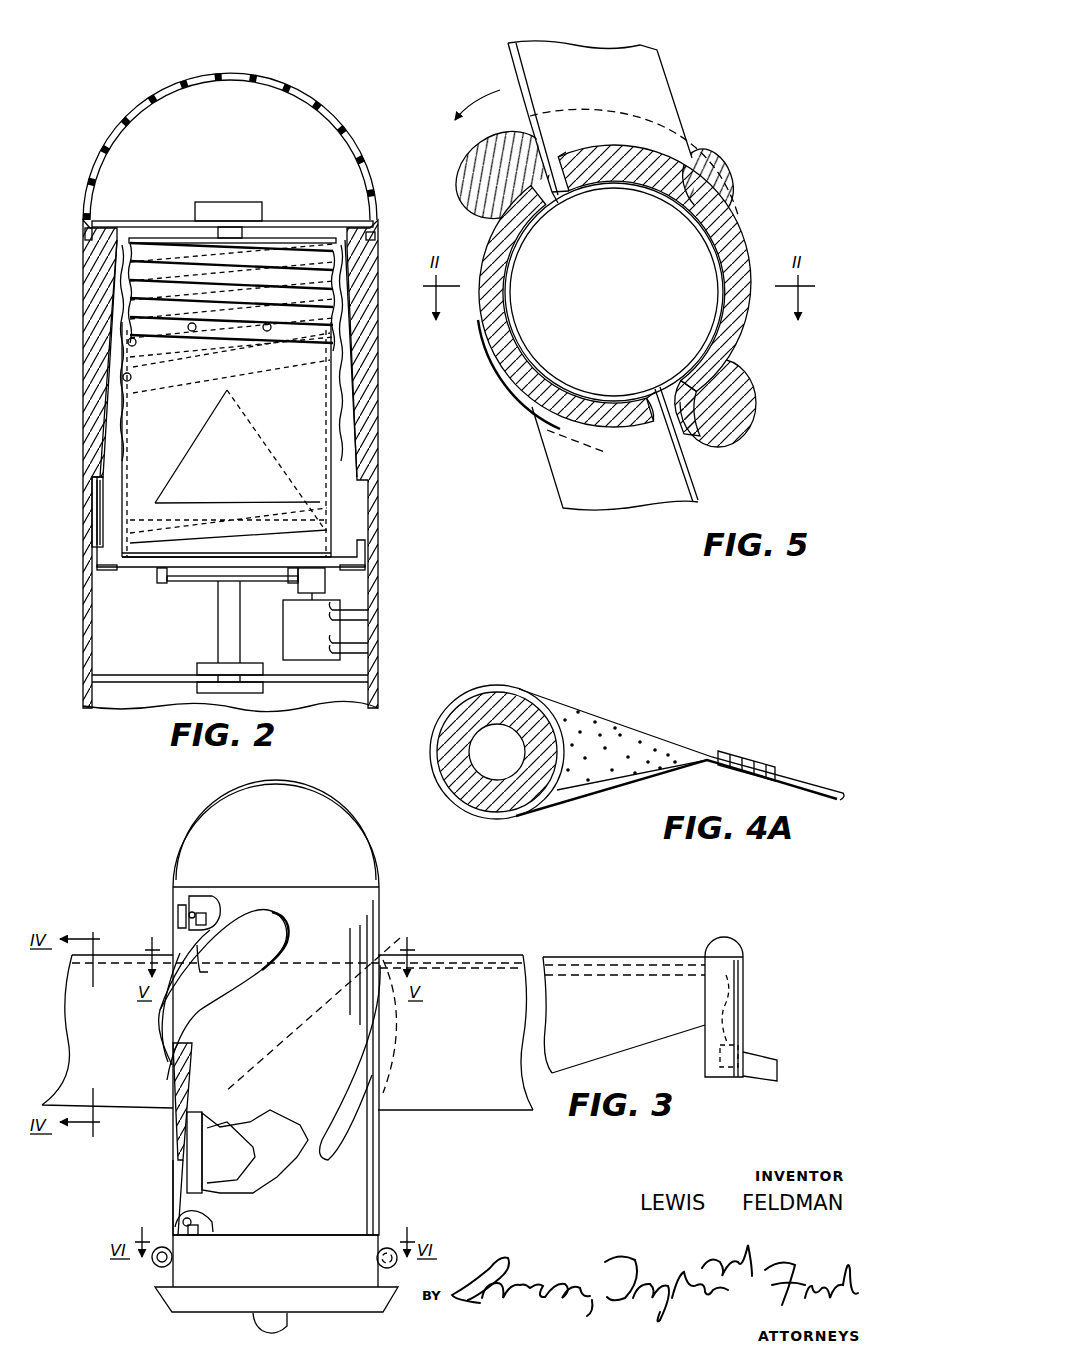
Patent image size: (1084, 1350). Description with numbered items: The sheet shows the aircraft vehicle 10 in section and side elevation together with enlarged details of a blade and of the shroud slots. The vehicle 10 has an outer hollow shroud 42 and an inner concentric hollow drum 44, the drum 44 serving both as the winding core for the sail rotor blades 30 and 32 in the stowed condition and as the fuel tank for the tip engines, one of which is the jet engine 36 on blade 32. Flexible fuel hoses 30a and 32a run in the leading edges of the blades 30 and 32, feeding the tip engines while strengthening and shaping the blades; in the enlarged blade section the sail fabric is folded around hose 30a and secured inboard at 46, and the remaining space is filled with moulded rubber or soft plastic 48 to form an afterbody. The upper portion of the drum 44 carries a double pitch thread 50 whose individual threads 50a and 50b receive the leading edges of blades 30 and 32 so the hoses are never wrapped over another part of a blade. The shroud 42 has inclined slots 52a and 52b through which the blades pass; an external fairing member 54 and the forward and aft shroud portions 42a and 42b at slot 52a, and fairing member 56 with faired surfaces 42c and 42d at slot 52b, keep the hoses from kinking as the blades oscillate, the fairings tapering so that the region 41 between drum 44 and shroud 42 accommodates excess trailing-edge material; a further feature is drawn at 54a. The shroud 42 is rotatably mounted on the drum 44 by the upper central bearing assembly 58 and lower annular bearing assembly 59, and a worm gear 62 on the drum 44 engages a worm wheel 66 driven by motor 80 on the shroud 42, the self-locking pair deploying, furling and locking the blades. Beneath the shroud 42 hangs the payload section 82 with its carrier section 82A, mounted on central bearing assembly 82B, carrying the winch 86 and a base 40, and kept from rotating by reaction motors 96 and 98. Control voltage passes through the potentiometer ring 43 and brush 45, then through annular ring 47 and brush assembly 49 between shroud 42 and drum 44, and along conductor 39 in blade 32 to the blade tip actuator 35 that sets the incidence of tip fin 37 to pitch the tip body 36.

In FIG. 2, the vehicle 10 is at (375, 404).
In FIG. 3, the vehicle 10 is at (382, 858).
In FIG. 2, the sail rotor blade 30 is at (130, 450).
In FIG. 5, the sail rotor blade 30 is at (662, 100).
In FIG. 4A, the sail rotor blade 30 is at (568, 708).
In FIG. 3, the sail rotor blade 30 is at (120, 957).
In FIG. 5, the flexible fuel hose 30a is at (517, 72).
In FIG. 4A, the flexible fuel hose 30a is at (452, 770).
In FIG. 3, the flexible fuel hose 30a is at (137, 953).
In FIG. 2, the sail rotor blade 32 is at (312, 465).
In FIG. 5, the sail rotor blade 32 is at (665, 483).
In FIG. 3, the sail rotor blade 32 is at (413, 1097).
In FIG. 5, the flexible fuel hose 32a is at (680, 494).
In FIG. 3, the flexible fuel hose 32a is at (455, 950).
In FIG. 3, the blade tip actuator 35 is at (745, 1048).
In FIG. 3, the jet engine 36 is at (740, 978).
In FIG. 3, the tip fin 37 is at (780, 1070).
In FIG. 3, the conductor 39 is at (677, 963).
In FIG. 3, the base 40 is at (175, 1300).
In FIG. 2, the region 41 is at (347, 433).
In FIG. 3, the region 41 is at (197, 945).
In FIG. 2, the shroud 42 is at (365, 368).
In FIG. 5, the shroud 42 is at (732, 296).
In FIG. 3, the shroud 42 is at (173, 1160).
In FIG. 5, the forward portion of shroud 42a is at (558, 165).
In FIG. 5, the aft portion of shroud 42b is at (586, 175).
In FIG. 5, the faired surface 42c is at (680, 374).
In FIG. 5, the faired surface 42d is at (635, 407).
In FIG. 3, the annular potentiometer ring 43 is at (192, 1235).
In FIG. 2, the drum 44 is at (274, 237).
In FIG. 5, the drum 44 is at (645, 287).
In FIG. 3, the drum 44 is at (203, 900).
In FIG. 3, the brush 45 is at (175, 1212).
In FIG. 4A, the securing location 46 is at (750, 752).
In FIG. 3, the annular ring 47 is at (172, 905).
In FIG. 4A, the filler material 48 is at (600, 733).
In FIG. 3, the brush assembly 49 is at (197, 893).
In FIG. 2, the double pitch thread 50 is at (343, 278).
In FIG. 2, the thread 50a is at (372, 236).
In FIG. 2, the thread 50b is at (122, 250).
In FIG. 5, the slot 52a is at (559, 198).
In FIG. 5, the slot 52b is at (652, 418).
In FIG. 3, the slot 52b is at (353, 1093).
In FIG. 5, the external fairing member 54 is at (478, 210).
In FIG. 3, the external fairing member 54 is at (240, 930).
In FIG. 3, the lobe edge 54a is at (192, 998).
In FIG. 5, the fairing member 56 is at (740, 407).
In FIG. 3, the fairing member 56 is at (335, 1143).
In FIG. 2, the upper central bearing assembly 58 is at (216, 210).
In FIG. 2, the lower annular bearing assembly 59 is at (93, 557).
In FIG. 2, the worm gear 62 is at (200, 578).
In FIG. 2, the worm wheel 66 is at (320, 580).
In FIG. 2, the motor 80 is at (300, 624).
In FIG. 3, the payload section 82 is at (330, 1262).
In FIG. 2, the carrier section 82A is at (138, 128).
In FIG. 3, the carrier section 82A is at (213, 822).
In FIG. 2, the central bearing assembly 82B is at (207, 667).
In FIG. 3, the winch 86 is at (287, 1323).
In FIG. 3, the reaction motor 96 is at (158, 1267).
In FIG. 3, the reaction motor 98 is at (377, 1260).